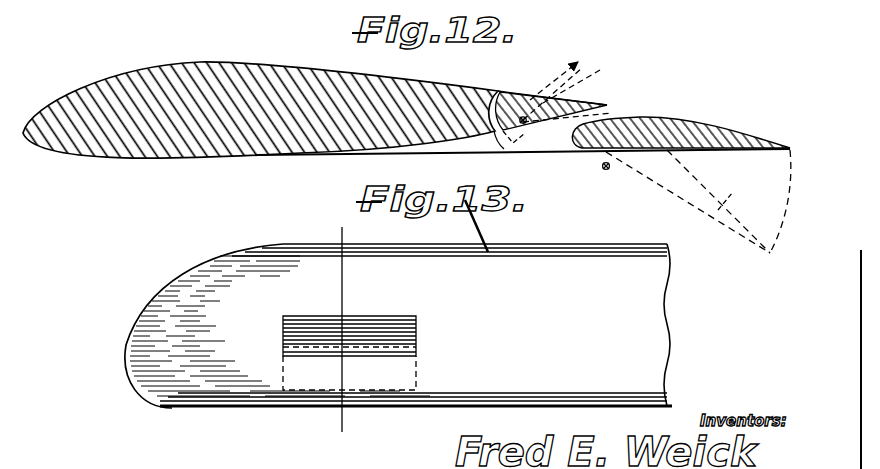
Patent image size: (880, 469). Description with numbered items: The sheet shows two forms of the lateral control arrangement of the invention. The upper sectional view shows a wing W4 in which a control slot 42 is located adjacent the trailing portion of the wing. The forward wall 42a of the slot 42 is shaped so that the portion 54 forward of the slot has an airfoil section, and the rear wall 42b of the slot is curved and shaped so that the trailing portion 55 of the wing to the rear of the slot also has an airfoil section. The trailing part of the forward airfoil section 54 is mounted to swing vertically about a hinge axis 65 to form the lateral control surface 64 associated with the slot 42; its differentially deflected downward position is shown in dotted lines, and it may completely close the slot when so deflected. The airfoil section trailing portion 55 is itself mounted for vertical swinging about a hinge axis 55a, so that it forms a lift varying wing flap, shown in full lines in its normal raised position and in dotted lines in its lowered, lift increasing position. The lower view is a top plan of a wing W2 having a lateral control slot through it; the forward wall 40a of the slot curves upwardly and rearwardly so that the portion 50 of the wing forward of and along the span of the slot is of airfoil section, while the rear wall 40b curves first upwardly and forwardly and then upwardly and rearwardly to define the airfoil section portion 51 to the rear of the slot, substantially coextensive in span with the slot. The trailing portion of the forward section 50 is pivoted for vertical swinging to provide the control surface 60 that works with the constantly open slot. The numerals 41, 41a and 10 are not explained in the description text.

In FIG. 12, the wing W4 is at (237, 62).
In FIG. 13, the wing W2 is at (248, 268).
In FIG. 12, the element 41 is at (163, 7).
In FIG. 12, the element 41a is at (78, 7).
In FIG. 12, the forward portion of the wing 54 is at (370, 108).
In FIG. 12, the hinge axis 65 is at (523, 117).
In FIG. 12, the lateral control surface 64 is at (567, 99).
In FIG. 12, the control slot 42 is at (566, 138).
In FIG. 12, the forward wall of the slot 42a is at (484, 138).
In FIG. 12, the rear wall of the slot 42b is at (620, 117).
In FIG. 12, the trailing portion of the wing 55 is at (724, 150).
In FIG. 12, the hinge axis 55a is at (610, 169).
In FIG. 13, the center line 10 is at (342, 332).
In FIG. 13, the rear portion of the wing 51 is at (396, 251).
In FIG. 13, the rear wall of the slot 40b is at (392, 324).
In FIG. 13, the control surface 60 is at (417, 341).
In FIG. 13, the forward wall of the slot 40a is at (385, 400).
In FIG. 13, the forward portion of the wing 50 is at (317, 403).